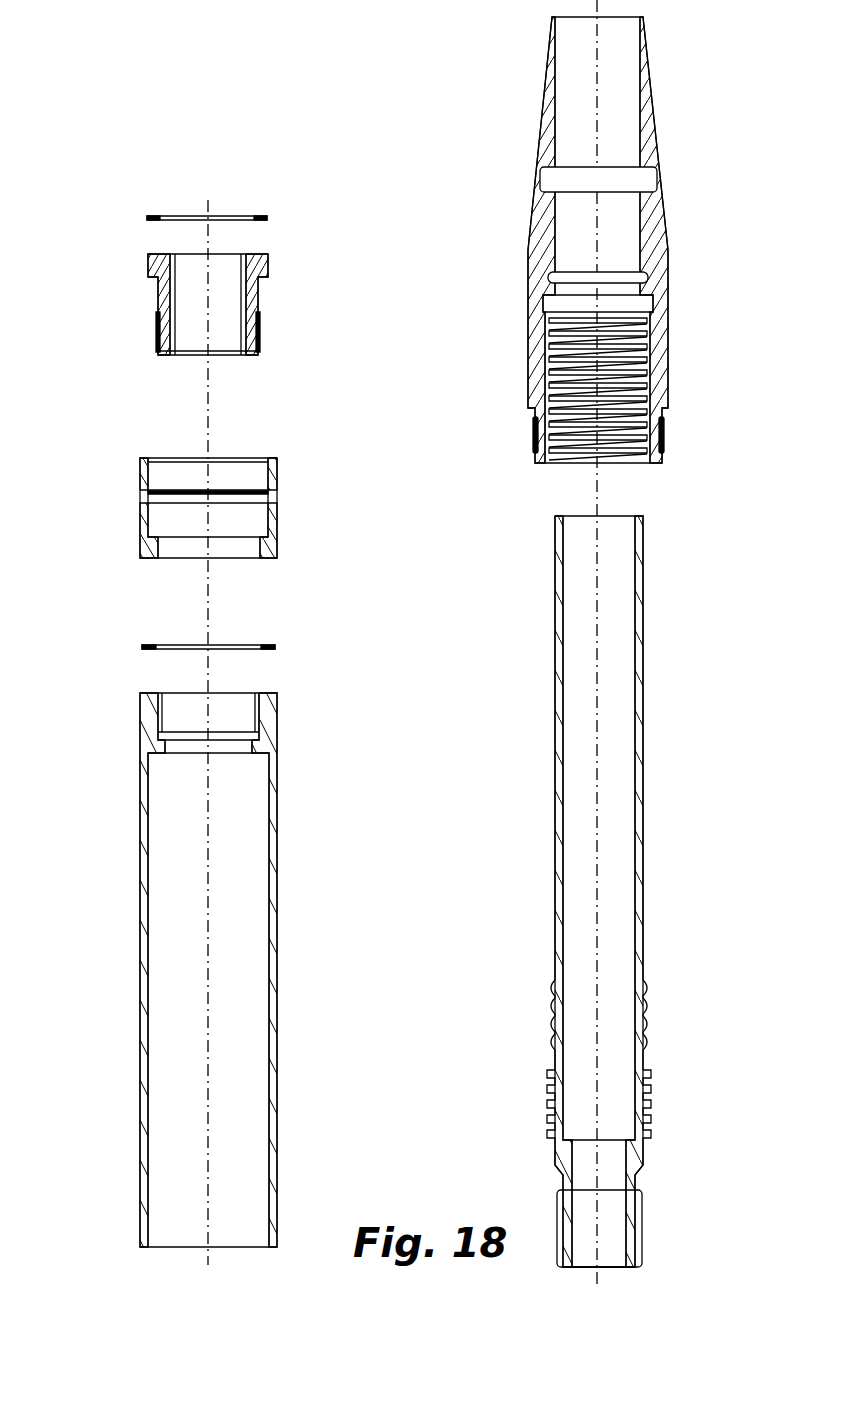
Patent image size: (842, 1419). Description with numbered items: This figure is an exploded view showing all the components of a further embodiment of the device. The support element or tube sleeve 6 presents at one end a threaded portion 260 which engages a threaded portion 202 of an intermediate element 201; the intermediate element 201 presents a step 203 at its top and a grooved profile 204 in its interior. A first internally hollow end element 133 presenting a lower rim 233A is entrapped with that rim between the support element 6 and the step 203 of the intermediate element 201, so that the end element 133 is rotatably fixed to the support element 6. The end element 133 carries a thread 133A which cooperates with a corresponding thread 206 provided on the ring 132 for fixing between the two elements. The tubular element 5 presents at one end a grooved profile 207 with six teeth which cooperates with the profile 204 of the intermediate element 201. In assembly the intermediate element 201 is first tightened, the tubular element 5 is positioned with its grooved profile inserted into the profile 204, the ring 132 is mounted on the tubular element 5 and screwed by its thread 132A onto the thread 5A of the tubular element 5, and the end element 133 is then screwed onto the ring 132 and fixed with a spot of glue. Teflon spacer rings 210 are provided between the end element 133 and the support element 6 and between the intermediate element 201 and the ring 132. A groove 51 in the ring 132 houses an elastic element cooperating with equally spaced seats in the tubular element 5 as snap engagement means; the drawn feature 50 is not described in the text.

The teflon spacer ring 210 is at (152, 216).
The intermediate element 201 is at (148, 265).
The threaded portion 202 is at (156, 338).
The step 203 is at (260, 264).
The grooved profile 204 is at (176, 283).
The end element 133 is at (140, 507).
The thread 133A is at (150, 480).
The lower rim 233A is at (160, 547).
The threaded portion 260 is at (160, 718).
The support element 6 is at (140, 887).
The groove 51 is at (566, 270).
The ring 132 is at (660, 262).
The thread 132A is at (635, 353).
The thread 206 is at (663, 440).
The tubular element 5 is at (645, 780).
The retention bumps 50 is at (641, 1040).
The thread 5A is at (651, 1073).
The grooved profile 207 is at (646, 1198).